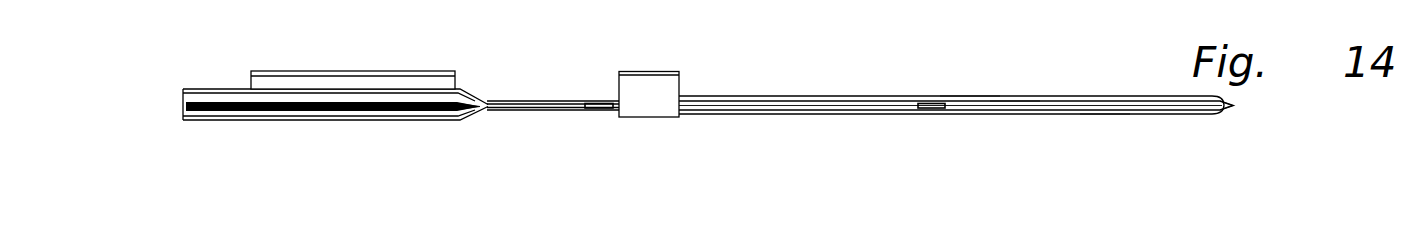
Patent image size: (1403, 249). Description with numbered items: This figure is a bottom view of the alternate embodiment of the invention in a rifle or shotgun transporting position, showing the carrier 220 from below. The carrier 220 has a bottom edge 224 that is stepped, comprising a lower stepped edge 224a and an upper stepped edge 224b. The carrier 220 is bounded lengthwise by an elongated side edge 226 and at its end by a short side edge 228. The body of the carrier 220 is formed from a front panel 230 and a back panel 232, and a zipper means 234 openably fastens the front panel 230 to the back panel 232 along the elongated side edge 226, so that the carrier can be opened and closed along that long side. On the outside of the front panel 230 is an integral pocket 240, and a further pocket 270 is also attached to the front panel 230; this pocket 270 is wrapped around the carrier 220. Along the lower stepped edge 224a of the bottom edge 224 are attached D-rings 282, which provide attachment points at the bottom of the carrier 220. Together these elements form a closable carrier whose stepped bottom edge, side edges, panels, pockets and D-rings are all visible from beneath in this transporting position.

The carrier 220 is at (845, 84).
The bottom edge 224 is at (752, 104).
The lower stepped edge 224a is at (1012, 101).
The upper stepped edge 224b is at (452, 108).
The elongated side edge 226 is at (185, 91).
The short side edge 228 is at (1232, 105).
The front panel 230 is at (967, 96).
The back panel 232 is at (1103, 115).
The zipper means 234 is at (188, 107).
The integral pocket 240 is at (402, 58).
The pocket 270 is at (660, 93).
The D-rings 282 is at (602, 110).